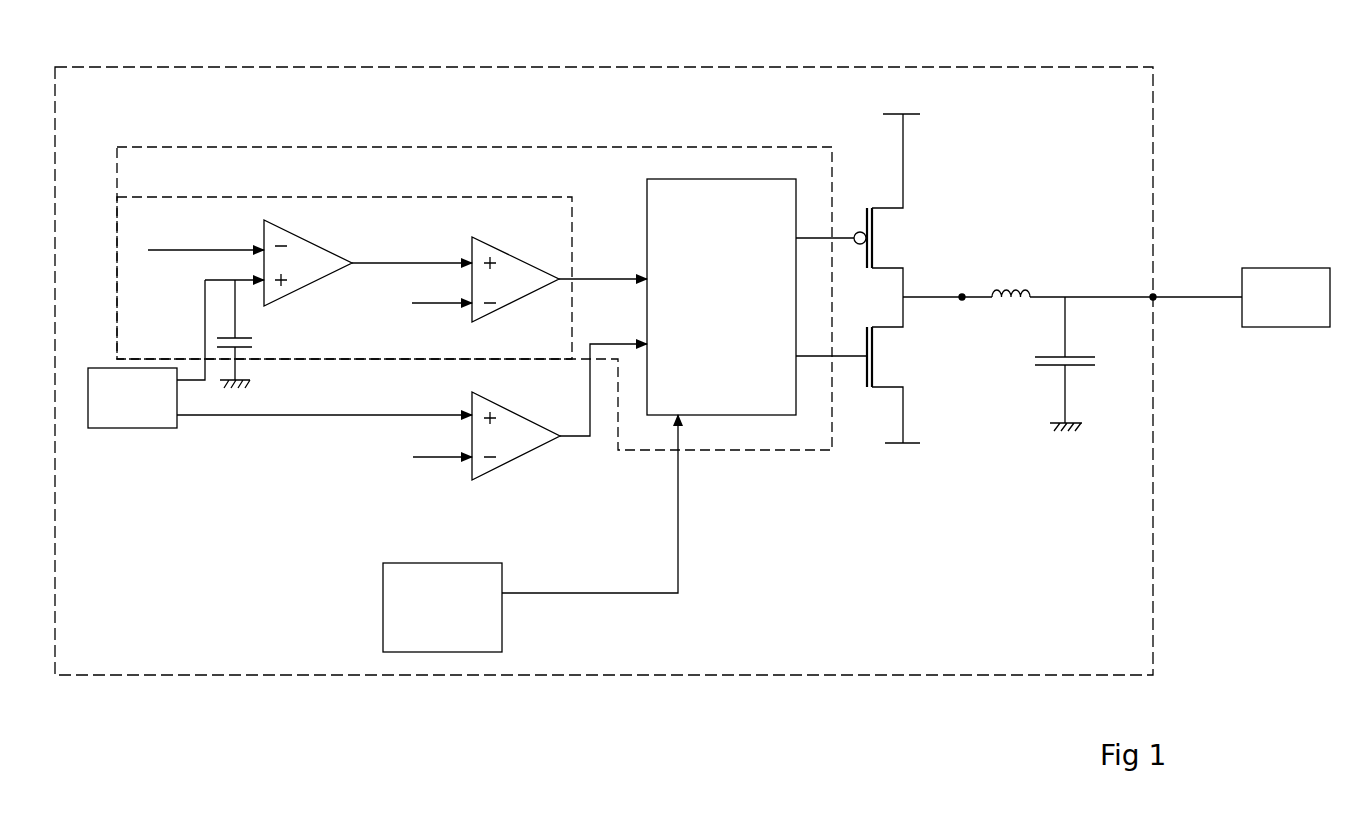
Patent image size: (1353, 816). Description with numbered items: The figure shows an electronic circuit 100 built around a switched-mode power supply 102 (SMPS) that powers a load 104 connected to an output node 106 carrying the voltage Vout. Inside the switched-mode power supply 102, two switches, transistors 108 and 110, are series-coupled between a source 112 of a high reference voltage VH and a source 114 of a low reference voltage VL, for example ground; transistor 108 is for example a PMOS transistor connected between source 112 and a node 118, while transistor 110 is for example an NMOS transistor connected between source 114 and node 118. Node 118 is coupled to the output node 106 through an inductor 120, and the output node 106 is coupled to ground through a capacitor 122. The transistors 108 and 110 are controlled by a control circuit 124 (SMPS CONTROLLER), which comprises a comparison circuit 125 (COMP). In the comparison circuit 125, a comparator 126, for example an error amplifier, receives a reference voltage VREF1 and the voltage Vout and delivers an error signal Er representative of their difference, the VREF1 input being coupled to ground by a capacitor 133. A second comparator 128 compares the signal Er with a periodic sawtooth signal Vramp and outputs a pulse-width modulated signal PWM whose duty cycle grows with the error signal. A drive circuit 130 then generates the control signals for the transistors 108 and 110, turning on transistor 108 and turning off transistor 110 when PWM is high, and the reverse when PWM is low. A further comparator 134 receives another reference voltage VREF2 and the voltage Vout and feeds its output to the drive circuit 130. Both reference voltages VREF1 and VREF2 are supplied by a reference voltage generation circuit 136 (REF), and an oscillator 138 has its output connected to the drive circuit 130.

The electronic circuit 100 is at (1212, 96).
The switched-mode power supply 102 is at (825, 67).
The load 104 is at (1278, 272).
The output node 106 is at (1158, 292).
The transistor 108 is at (883, 200).
The transistor 110 is at (884, 395).
The source of a high reference voltage 112 is at (886, 108).
The source of a low reference voltage 114 is at (893, 447).
The node 118 is at (964, 294).
The inductor 120 is at (1012, 290).
The capacitor 122 is at (1083, 367).
The control circuit 124 is at (780, 140).
The comparison circuit 125 is at (207, 197).
The comparator 126 is at (305, 242).
The comparator 128 is at (510, 268).
The drive circuit 130 is at (660, 212).
The capacitor 133 is at (245, 328).
The comparator 134 is at (516, 448).
The reference voltage generation circuit 136 is at (130, 428).
The oscillator 138 is at (476, 563).